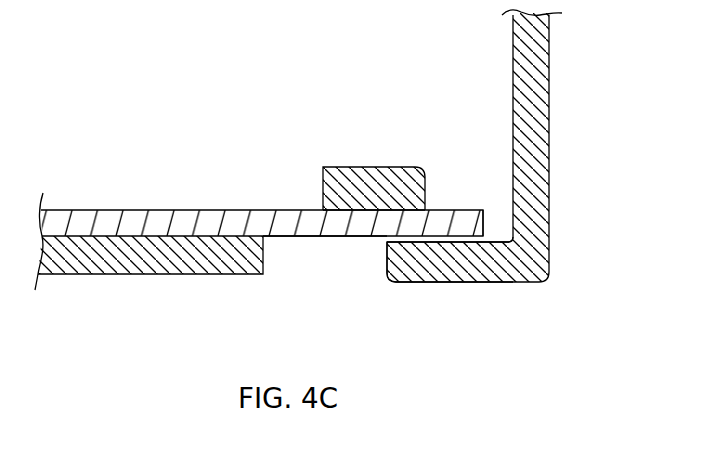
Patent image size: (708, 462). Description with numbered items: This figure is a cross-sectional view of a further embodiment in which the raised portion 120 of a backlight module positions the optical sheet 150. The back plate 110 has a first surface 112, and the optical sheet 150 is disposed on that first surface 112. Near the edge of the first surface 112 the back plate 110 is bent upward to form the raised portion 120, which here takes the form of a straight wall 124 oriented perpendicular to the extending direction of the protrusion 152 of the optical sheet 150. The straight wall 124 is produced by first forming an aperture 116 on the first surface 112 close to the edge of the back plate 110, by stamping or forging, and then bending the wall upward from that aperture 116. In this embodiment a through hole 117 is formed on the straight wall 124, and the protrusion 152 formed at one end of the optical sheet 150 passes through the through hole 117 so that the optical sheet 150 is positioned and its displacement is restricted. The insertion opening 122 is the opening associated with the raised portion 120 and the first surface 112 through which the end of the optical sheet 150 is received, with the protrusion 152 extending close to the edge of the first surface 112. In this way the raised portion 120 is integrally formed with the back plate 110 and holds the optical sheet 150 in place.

The back plate 110 is at (542, 80).
The first surface 112 is at (133, 236).
The aperture 116 is at (302, 258).
The through hole 117 is at (418, 240).
The raised portion 120 is at (397, 167).
The insertion opening 122 is at (322, 205).
The straight wall 124 is at (357, 173).
The optical sheet 150 is at (157, 208).
The protrusion 152 is at (477, 220).